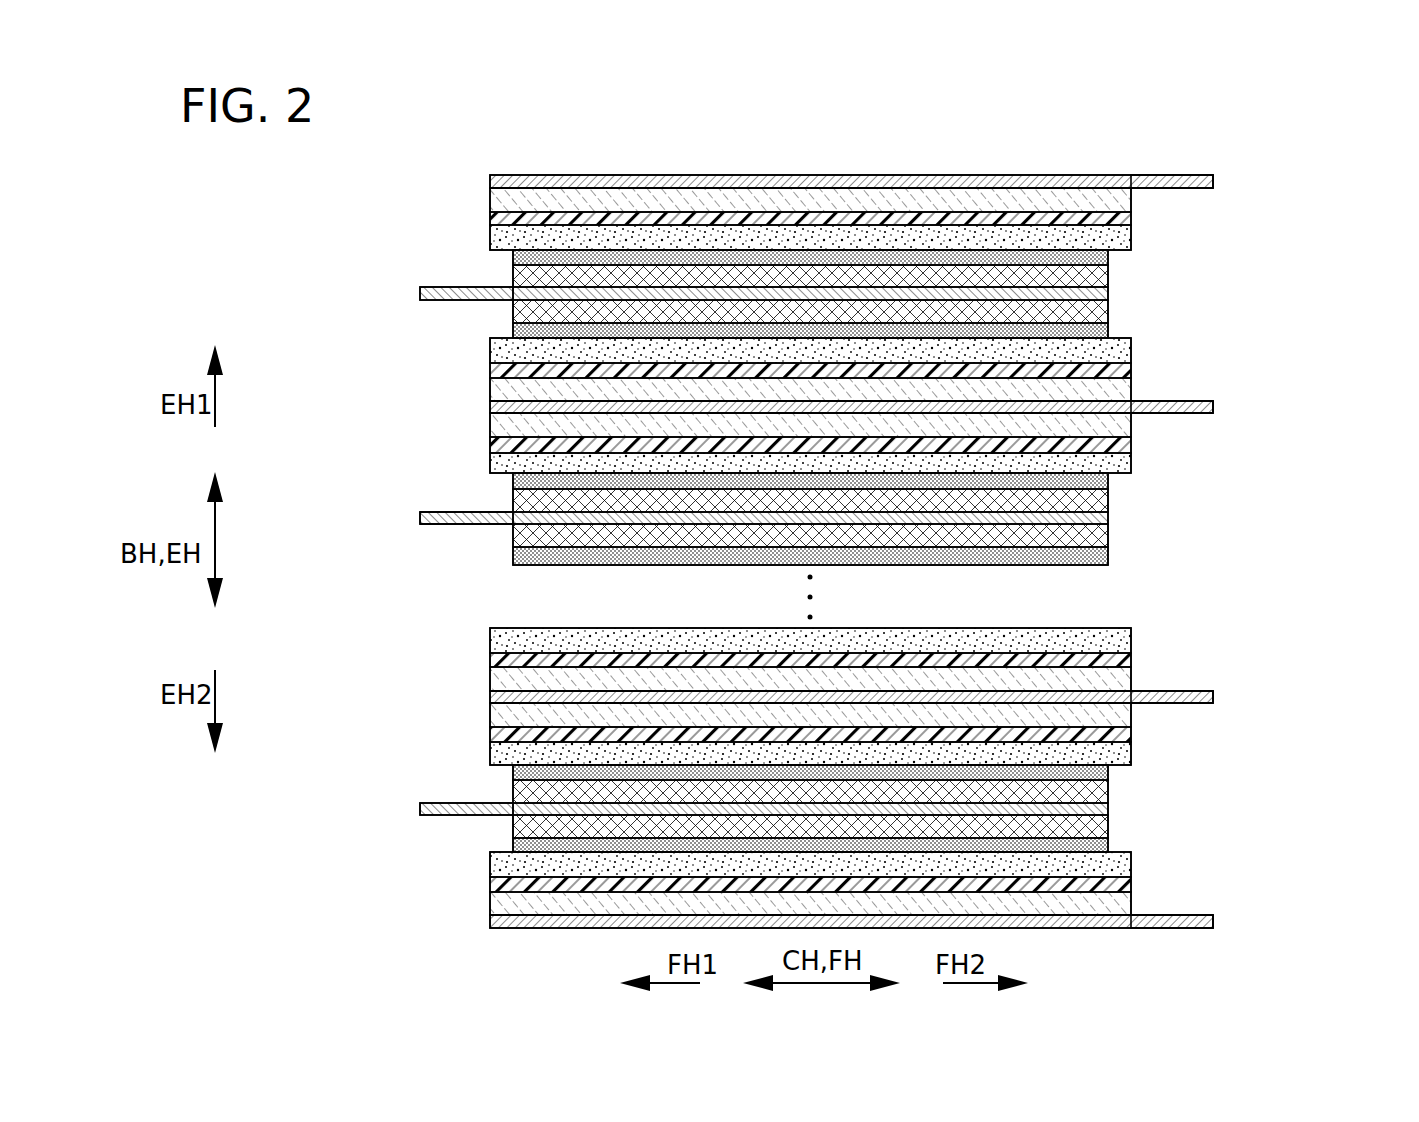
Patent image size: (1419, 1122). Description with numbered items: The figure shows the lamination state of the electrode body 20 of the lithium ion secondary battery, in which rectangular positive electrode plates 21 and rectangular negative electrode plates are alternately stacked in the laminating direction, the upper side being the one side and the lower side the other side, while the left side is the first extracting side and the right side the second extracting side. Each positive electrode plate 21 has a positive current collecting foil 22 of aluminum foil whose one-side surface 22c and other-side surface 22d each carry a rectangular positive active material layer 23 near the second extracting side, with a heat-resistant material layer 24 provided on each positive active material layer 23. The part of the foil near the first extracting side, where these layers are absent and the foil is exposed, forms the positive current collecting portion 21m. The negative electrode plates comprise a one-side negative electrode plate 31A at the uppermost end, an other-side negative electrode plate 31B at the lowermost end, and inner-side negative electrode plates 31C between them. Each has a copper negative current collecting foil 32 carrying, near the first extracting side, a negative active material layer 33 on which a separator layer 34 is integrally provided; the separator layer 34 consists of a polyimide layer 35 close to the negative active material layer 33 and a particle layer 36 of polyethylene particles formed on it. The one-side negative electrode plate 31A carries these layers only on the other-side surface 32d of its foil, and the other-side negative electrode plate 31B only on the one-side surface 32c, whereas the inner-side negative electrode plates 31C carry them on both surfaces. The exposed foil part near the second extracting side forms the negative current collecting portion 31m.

The electrode body 20 is at (1278, 297).
The positive electrode plate 21 is at (434, 288).
The positive current collecting portion 21m is at (457, 300).
The positive current collecting foil 22 is at (444, 525).
The one-side surface 22c is at (448, 512).
The other-side surface 22d is at (480, 525).
The positive active material layer 23 is at (1108, 502).
The heat-resistant material layer 24 is at (1108, 481).
The one-side negative electrode plate 31A is at (1213, 183).
The other-side negative electrode plate 31B is at (1213, 923).
The inner-side negative electrode plate 31C is at (1213, 408).
The negative current collecting portion 31m is at (1155, 190).
The negative current collecting foil 32 is at (1195, 176).
The one-side surface 32c is at (1160, 400).
The other-side surface 32d is at (1177, 189).
The negative active material layer 33 is at (490, 200).
The separator layer 34 is at (305, 196).
The polyimide layer 35 is at (490, 218).
The particle layer 36 is at (490, 237).